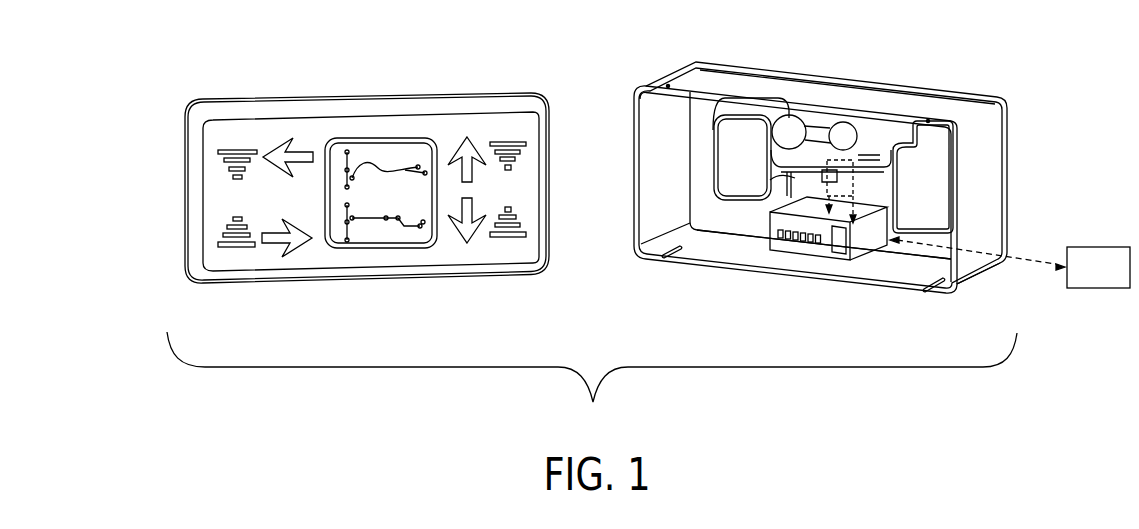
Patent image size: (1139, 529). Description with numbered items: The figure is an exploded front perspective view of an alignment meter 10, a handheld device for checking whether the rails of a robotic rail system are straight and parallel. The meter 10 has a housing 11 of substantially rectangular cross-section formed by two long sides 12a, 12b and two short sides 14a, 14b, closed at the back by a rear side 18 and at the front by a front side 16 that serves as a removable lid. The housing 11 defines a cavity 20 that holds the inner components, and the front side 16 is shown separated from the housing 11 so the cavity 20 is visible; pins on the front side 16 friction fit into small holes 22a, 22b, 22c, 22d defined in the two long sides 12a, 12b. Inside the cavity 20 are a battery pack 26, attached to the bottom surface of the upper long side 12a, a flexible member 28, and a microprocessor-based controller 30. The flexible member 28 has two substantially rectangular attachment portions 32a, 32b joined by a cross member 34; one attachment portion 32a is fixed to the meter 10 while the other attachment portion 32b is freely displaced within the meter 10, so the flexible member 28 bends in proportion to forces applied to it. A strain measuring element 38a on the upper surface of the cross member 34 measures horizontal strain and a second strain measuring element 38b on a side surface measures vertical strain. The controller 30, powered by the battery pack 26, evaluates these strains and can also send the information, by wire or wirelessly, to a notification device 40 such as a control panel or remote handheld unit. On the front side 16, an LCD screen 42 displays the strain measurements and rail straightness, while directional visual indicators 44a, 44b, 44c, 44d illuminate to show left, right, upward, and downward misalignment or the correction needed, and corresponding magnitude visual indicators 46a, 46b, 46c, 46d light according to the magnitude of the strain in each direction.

The alignment meter 10 is at (592, 382).
The housing 11 is at (703, 74).
The upper long side 12a is at (800, 80).
The long side 12b is at (818, 270).
The short side 14a is at (647, 125).
The short side 14b is at (993, 243).
The front side 16 is at (238, 130).
The rear side 18 is at (707, 225).
The cavity 20 is at (690, 123).
The small hole 22a is at (668, 85).
The small hole 22b is at (928, 121).
The small hole 22c is at (925, 296).
The small hole 22d is at (666, 259).
The battery pack 26 is at (870, 125).
The flexible member 28 is at (879, 158).
The microprocessor-based controller 30 is at (778, 250).
The attachment portion 32a is at (738, 128).
The attachment portion 32b is at (939, 187).
The cross member 34 is at (865, 177).
The strain measuring element 38a is at (828, 172).
The strain measuring element 38b is at (823, 175).
The notification device 40 is at (1093, 290).
The LCD screen 42 is at (376, 138).
The first directional visual indicator 44a is at (289, 140).
The second directional visual indicator 44b is at (287, 253).
The third directional visual indicator 44c is at (471, 135).
The fourth directional visual indicator 44d is at (450, 218).
The first magnitude visual indicator 46a is at (218, 176).
The second magnitude visual indicator 46b is at (212, 235).
The third magnitude visual indicator 46c is at (533, 160).
The fourth magnitude visual indicator 46d is at (534, 220).